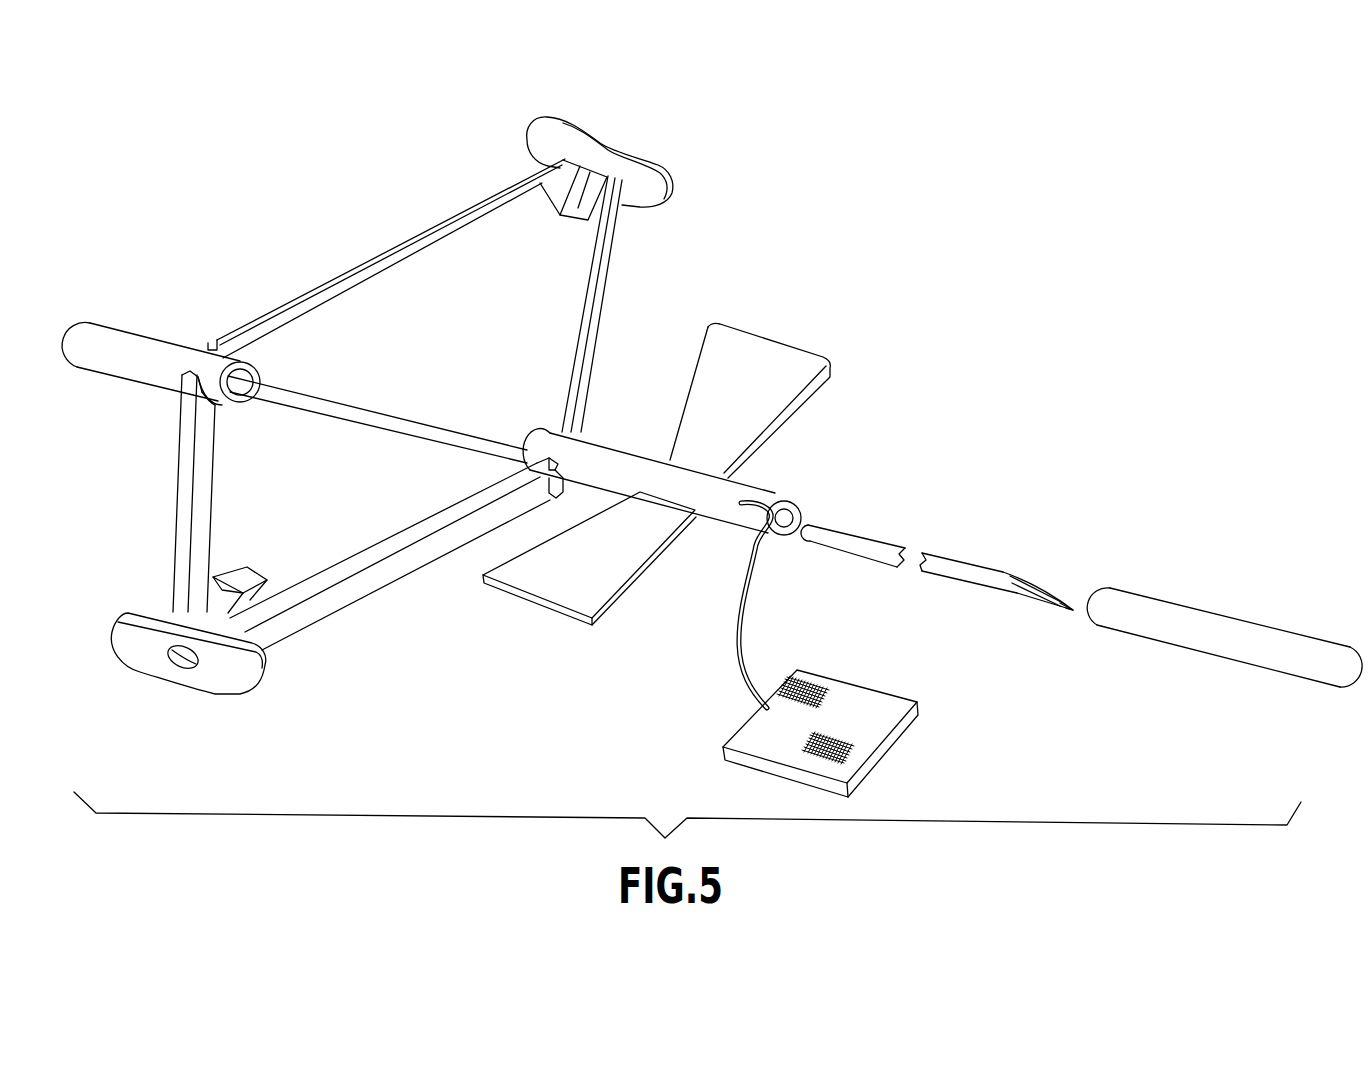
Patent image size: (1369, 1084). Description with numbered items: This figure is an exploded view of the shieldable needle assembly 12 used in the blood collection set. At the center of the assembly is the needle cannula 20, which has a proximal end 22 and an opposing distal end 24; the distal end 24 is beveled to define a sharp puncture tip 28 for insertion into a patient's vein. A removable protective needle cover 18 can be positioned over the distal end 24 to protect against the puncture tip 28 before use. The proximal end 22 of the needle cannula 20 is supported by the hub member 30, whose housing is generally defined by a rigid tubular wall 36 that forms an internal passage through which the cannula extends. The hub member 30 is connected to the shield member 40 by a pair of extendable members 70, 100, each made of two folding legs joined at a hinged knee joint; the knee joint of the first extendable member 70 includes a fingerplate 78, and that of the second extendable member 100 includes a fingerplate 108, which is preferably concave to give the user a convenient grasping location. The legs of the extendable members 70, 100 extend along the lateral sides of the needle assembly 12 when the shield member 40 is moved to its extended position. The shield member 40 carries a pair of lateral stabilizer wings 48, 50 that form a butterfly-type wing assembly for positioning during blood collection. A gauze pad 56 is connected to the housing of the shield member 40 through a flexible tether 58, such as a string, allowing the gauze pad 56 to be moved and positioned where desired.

The shieldable needle assembly 12 is at (733, 265).
The removable protective needle cover 18 is at (1190, 610).
The needle cannula 20 is at (997, 581).
The proximal end 22 is at (838, 527).
The distal end 24 is at (1002, 568).
The sharp puncture tip 28 is at (1075, 607).
The hub member 30 is at (161, 349).
The rigid tubular wall 36 is at (87, 353).
The shield member 40 is at (768, 497).
The lateral wing 48 is at (610, 568).
The lateral wing 50 is at (783, 343).
The gauze pad 56 is at (857, 697).
The tether 58 is at (737, 630).
The first extendable member 70 is at (388, 573).
The fingerplate 78 is at (250, 668).
The second extendable member 100 is at (365, 270).
The fingerplate 108 is at (670, 178).